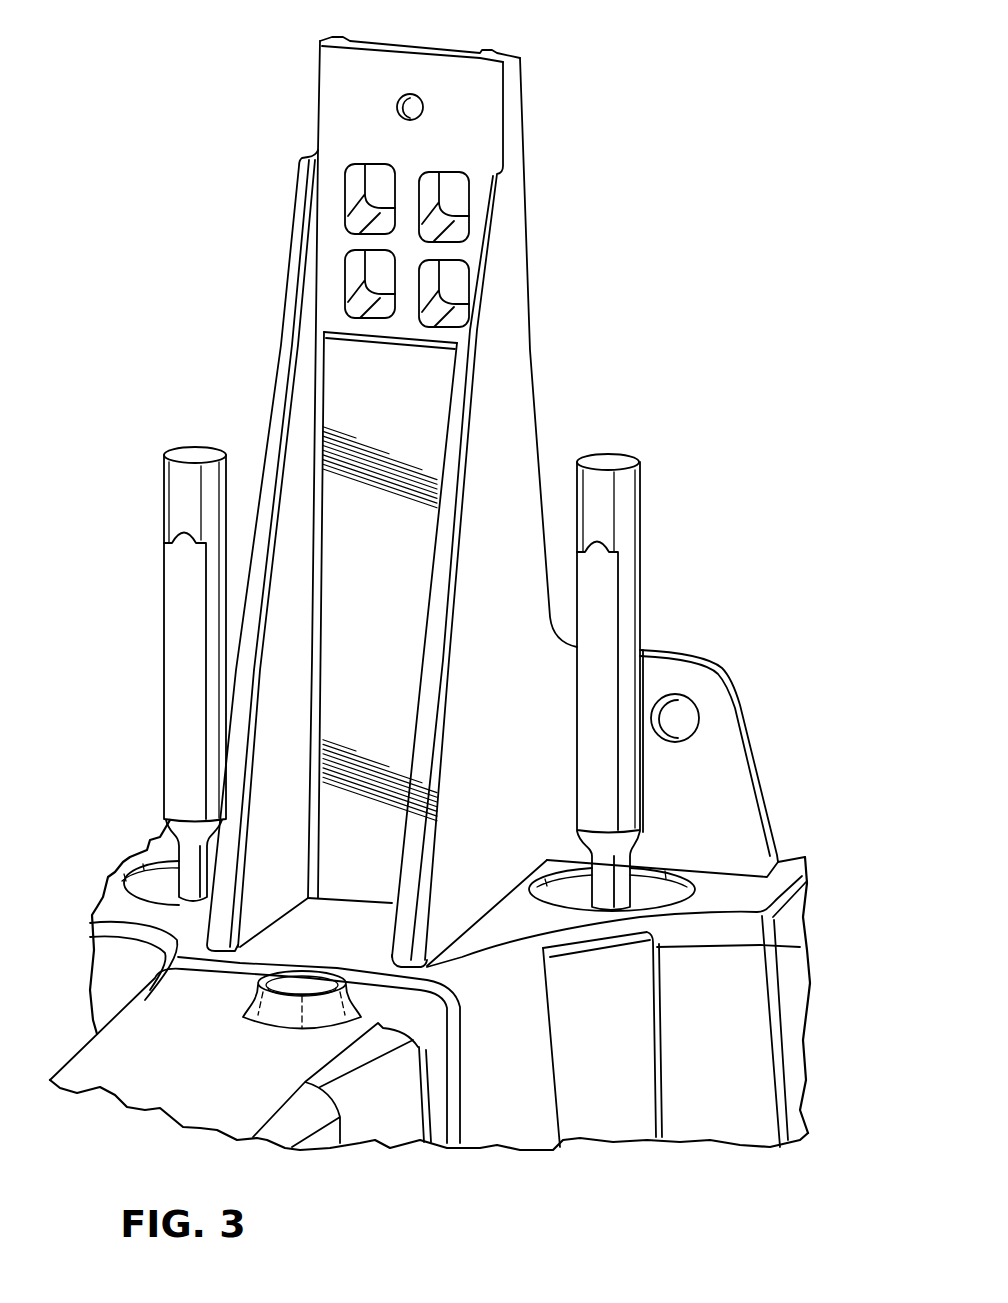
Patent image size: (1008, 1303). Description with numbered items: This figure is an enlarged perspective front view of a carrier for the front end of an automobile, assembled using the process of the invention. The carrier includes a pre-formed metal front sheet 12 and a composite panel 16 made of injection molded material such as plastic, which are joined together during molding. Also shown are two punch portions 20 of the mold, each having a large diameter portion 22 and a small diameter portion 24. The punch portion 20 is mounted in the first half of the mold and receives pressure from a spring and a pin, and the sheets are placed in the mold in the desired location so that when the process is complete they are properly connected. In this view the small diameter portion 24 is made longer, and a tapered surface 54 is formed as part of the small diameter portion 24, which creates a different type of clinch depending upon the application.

The front sheet 12 is at (602, 1128).
The composite panel 16 is at (757, 1012).
The punch portion 20 is at (160, 447).
The large diameter portion 22 is at (176, 640).
The small diameter portion 24 is at (188, 880).
The tapered surface 54 is at (173, 826).